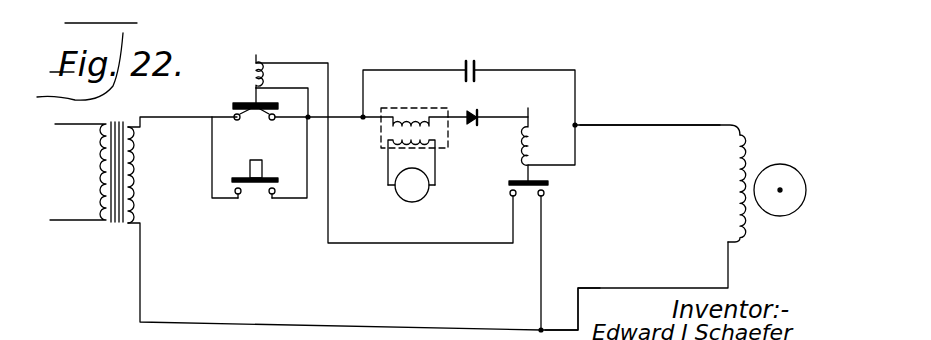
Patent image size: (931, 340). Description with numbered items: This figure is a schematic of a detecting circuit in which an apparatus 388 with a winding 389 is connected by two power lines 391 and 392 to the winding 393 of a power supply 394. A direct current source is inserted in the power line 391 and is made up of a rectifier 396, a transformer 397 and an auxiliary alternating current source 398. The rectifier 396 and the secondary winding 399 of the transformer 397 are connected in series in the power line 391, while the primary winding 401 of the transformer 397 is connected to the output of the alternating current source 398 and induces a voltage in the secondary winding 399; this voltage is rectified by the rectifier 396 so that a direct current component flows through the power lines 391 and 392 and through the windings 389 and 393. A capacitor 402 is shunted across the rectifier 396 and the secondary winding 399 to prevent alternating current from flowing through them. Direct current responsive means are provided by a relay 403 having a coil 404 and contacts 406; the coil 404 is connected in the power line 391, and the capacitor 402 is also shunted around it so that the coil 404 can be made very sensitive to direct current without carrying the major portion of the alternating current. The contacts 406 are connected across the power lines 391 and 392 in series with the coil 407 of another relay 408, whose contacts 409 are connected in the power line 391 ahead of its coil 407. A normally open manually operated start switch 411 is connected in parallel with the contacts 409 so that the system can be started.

The apparatus 388 is at (759, 148).
The winding 389 is at (744, 222).
The power line 391 is at (652, 125).
The power line 392 is at (557, 330).
The winding of power supply 393 is at (137, 189).
The power supply 394 is at (103, 229).
The rectifier 396 is at (470, 126).
The transformer 397 is at (379, 139).
The auxiliary alternating current source 398 is at (400, 200).
The secondary winding 399 is at (417, 101).
The primary winding 401 is at (426, 142).
The capacitor 402 is at (472, 60).
The relay 403 is at (548, 175).
The coil 404 is at (536, 137).
The contacts 406 is at (517, 197).
The coil 407 is at (235, 58).
The relay 408 is at (268, 57).
The contacts 409 is at (253, 119).
The start switch 411 is at (238, 167).